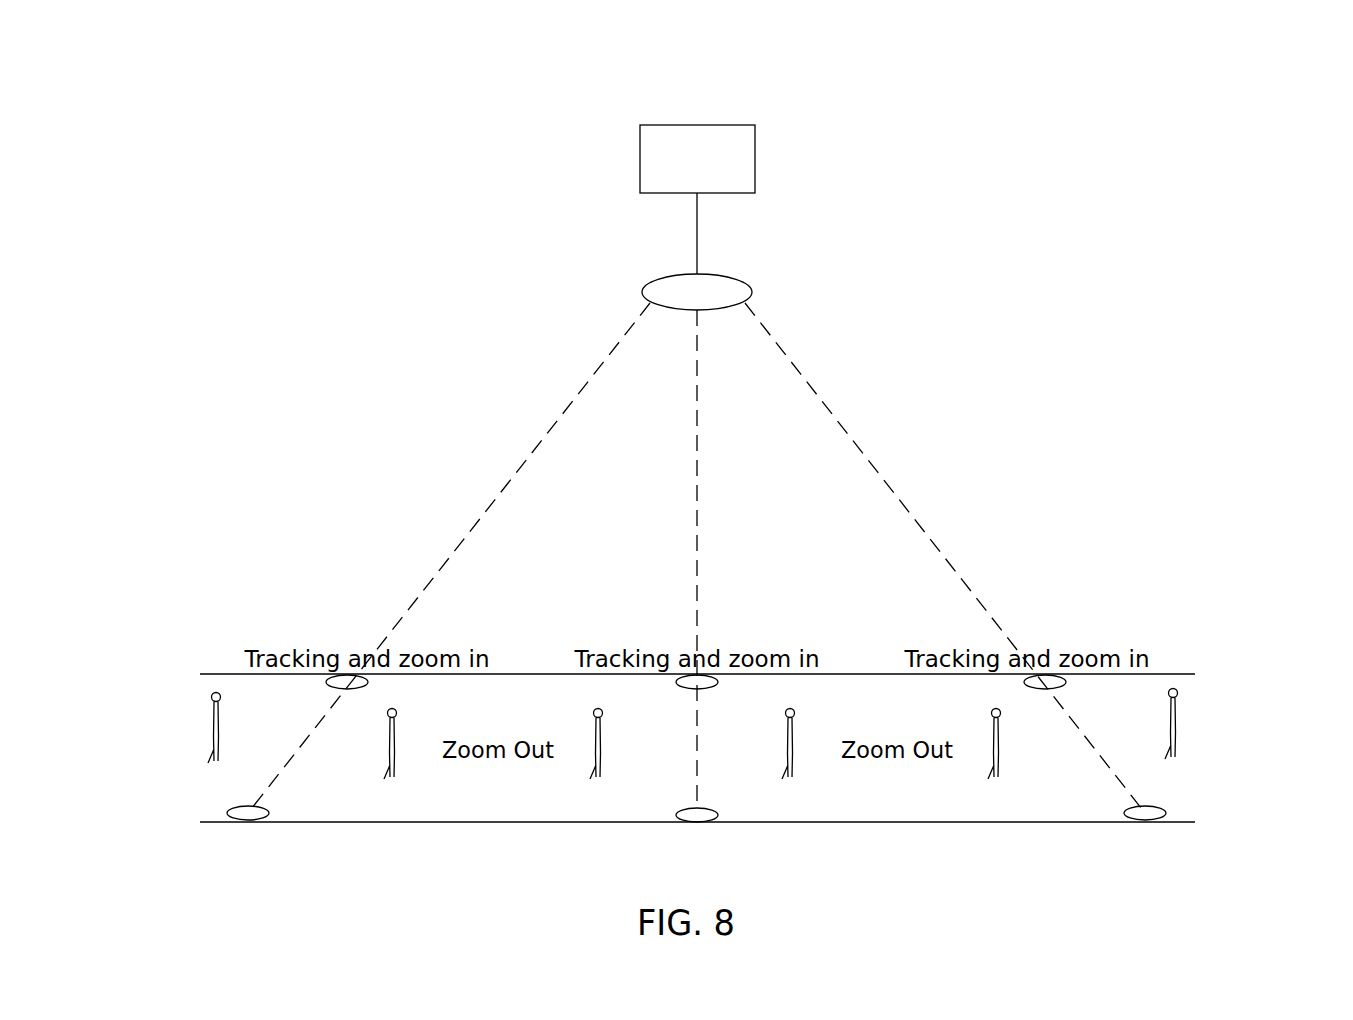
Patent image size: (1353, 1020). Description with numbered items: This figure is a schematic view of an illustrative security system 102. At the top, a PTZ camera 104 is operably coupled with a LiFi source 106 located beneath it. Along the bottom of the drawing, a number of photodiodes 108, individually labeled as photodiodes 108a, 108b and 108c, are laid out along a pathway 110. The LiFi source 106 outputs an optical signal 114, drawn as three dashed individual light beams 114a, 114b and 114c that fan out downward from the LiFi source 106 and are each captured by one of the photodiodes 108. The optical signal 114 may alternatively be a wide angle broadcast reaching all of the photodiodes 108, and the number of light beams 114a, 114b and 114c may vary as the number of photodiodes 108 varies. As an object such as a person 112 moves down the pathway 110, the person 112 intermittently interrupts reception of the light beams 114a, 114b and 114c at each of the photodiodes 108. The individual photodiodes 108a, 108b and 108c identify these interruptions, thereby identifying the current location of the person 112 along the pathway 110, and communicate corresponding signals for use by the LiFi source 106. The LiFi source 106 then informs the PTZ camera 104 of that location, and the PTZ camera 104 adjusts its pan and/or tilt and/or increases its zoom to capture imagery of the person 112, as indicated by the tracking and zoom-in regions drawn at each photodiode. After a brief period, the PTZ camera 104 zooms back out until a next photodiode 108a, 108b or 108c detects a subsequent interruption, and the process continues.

The security system 102 is at (1237, 123).
The PTZ camera 104 is at (755, 158).
The LiFi source 106 is at (722, 278).
The photodiodes 108 is at (203, 812).
The photodiode 108a is at (258, 806).
The photodiode 108b is at (708, 808).
The photodiode 108c is at (1158, 806).
The pathway 110 is at (177, 740).
The person 112 is at (213, 696).
The optical signal 114 is at (467, 393).
The light beam 114a is at (550, 413).
The light beam 114b is at (697, 420).
The light beam 114c is at (848, 413).